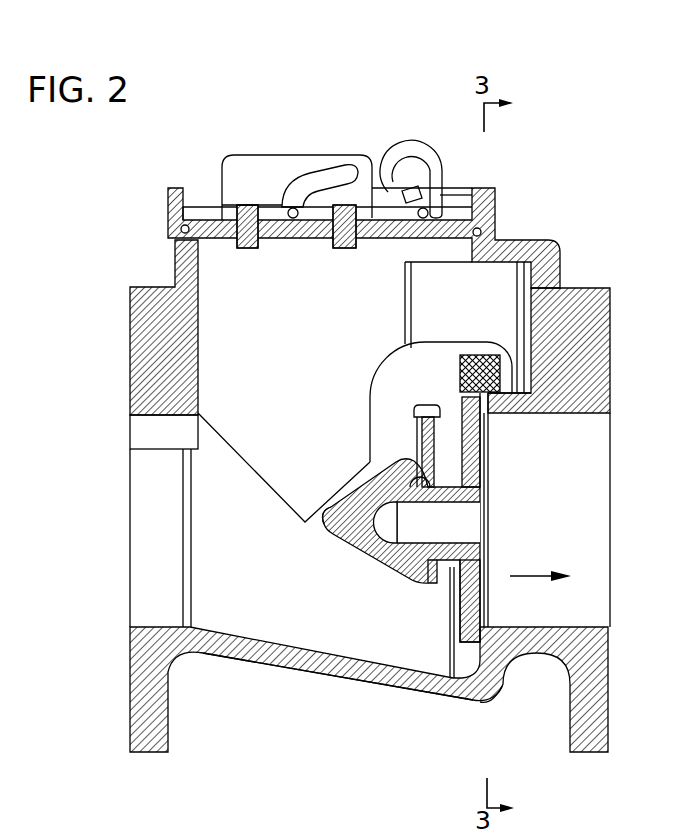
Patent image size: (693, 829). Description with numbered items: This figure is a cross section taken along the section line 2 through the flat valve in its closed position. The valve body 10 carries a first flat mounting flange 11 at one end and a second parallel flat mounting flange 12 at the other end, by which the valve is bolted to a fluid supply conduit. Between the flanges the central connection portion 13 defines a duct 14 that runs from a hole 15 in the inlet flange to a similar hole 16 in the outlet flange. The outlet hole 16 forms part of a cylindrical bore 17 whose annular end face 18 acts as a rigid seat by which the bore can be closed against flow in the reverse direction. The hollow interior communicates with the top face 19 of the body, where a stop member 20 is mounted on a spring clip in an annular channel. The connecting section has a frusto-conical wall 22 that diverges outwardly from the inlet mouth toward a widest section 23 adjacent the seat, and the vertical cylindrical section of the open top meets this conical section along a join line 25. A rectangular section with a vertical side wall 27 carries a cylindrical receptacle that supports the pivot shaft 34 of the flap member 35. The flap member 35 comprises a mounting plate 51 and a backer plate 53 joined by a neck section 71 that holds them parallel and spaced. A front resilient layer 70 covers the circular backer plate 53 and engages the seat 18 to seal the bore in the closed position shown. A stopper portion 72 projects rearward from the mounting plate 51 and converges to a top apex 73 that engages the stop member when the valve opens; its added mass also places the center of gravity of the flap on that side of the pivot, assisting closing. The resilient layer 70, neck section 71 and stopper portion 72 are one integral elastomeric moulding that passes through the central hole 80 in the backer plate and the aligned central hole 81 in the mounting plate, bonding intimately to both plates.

The cover 2 is at (374, 285).
The valve body 10 is at (361, 497).
The first flat mounting flange 11 is at (130, 309).
The second parallel flat mounting flange 12 is at (565, 345).
The central connection portion 13 is at (260, 655).
The duct 14 is at (263, 588).
The hole 15 is at (138, 502).
The hole 16 is at (612, 424).
The cylindrical bore 17 is at (533, 407).
The annular end face 18 is at (485, 413).
The top face 19 is at (272, 270).
The stop member 20 is at (318, 140).
The frusto-conical wall 22 is at (391, 688).
The widest section 23 is at (471, 696).
The join line 25 is at (262, 468).
The vertical side wall 27 is at (498, 267).
The pivot shaft 34 is at (474, 356).
The flap member 35 is at (400, 510).
The mounting plate 51 is at (420, 586).
The backer plate 53 is at (470, 618).
The front resilient layer 70 is at (478, 570).
The neck section 71 is at (430, 483).
The stopper portion 72 is at (366, 550).
The top apex 73 is at (326, 518).
The central hole 80 is at (477, 490).
The central hole 81 is at (406, 485).